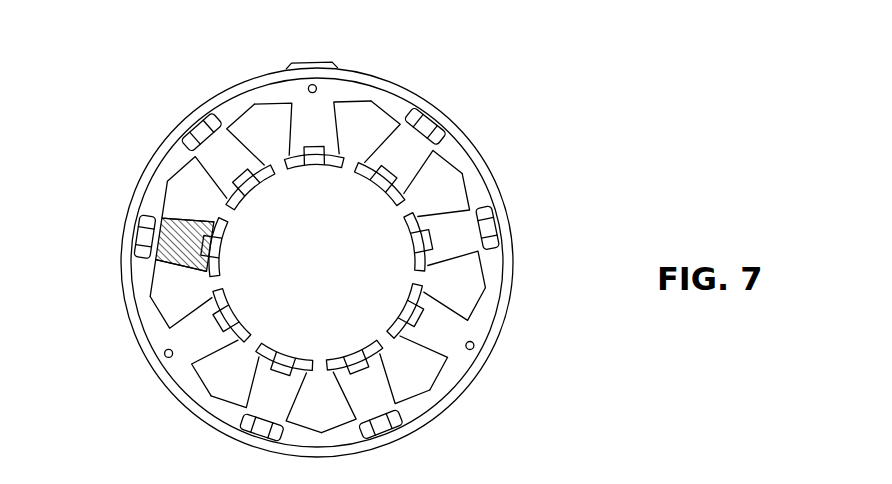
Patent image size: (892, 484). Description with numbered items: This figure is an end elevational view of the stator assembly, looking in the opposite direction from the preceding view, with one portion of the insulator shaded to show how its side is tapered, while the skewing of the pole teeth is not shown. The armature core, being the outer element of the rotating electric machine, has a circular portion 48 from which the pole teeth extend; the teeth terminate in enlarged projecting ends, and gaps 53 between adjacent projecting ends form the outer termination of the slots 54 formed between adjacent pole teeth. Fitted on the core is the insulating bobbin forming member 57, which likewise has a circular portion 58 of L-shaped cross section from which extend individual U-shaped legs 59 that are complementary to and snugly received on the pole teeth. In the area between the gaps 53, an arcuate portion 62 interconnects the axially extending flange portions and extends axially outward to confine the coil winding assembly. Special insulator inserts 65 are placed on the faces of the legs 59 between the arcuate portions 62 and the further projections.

The circular portion 48 is at (500, 203).
The gaps 53 is at (395, 203).
The slots 54 is at (453, 395).
The insulating bobbin forming member 57 is at (442, 141).
The circular portion 58 is at (373, 92).
The legs 59 is at (467, 329).
The arcuate portion 62 is at (412, 290).
The insulator inserts 65 is at (182, 266).